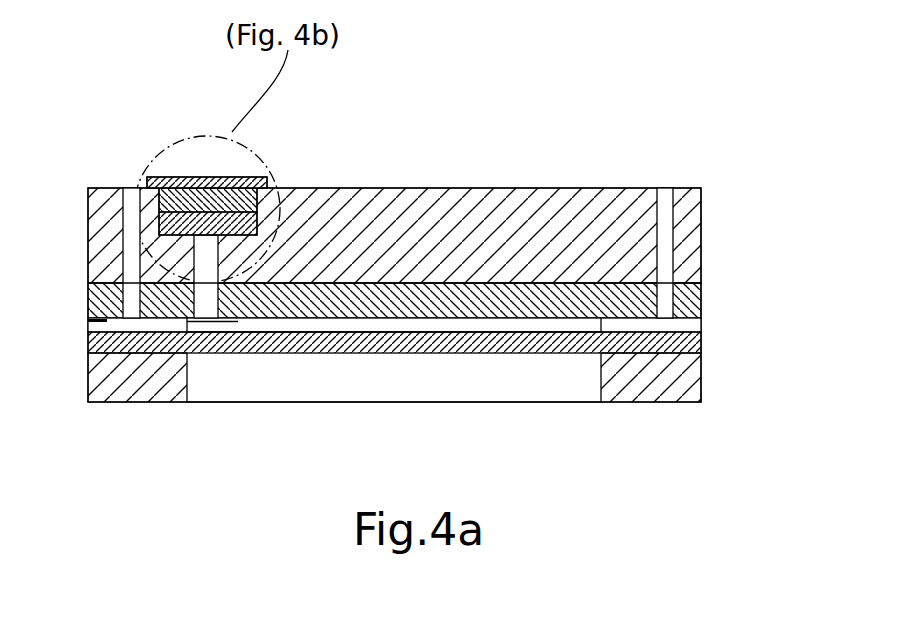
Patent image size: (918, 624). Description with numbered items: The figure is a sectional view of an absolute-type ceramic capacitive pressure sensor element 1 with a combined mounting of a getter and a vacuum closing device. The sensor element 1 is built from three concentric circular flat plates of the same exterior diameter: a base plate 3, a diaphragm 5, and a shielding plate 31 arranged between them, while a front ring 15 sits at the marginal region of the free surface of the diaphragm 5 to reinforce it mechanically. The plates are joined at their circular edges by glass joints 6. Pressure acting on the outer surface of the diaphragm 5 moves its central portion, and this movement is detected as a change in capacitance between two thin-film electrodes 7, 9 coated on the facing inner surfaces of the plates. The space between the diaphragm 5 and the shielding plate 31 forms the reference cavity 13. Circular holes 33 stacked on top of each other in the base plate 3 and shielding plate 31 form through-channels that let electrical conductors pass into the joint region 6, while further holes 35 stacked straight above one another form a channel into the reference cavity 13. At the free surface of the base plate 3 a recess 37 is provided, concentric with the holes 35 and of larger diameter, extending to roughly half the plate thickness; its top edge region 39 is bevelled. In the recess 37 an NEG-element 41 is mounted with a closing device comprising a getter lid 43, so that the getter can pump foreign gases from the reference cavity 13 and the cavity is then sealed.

The sensor element 1 is at (722, 175).
The base plate 3 is at (523, 213).
The diaphragm 5 is at (682, 342).
The glass joints 6 is at (88, 322).
The electrode 7 is at (430, 318).
The electrode 9 is at (400, 328).
The reference cavity 13 is at (238, 320).
The front ring 15 is at (663, 385).
The intermediate layer 31 is at (683, 306).
The circular holes 33 is at (662, 248).
The holes 35 is at (203, 258).
The recess 37 is at (258, 230).
The edge region 39 is at (278, 160).
The NEG-element 41 is at (258, 216).
The getter lid 43 is at (197, 177).